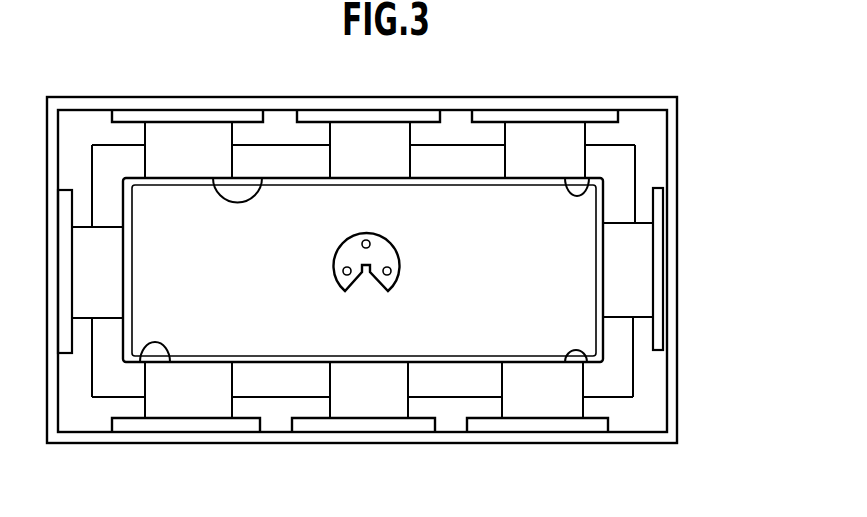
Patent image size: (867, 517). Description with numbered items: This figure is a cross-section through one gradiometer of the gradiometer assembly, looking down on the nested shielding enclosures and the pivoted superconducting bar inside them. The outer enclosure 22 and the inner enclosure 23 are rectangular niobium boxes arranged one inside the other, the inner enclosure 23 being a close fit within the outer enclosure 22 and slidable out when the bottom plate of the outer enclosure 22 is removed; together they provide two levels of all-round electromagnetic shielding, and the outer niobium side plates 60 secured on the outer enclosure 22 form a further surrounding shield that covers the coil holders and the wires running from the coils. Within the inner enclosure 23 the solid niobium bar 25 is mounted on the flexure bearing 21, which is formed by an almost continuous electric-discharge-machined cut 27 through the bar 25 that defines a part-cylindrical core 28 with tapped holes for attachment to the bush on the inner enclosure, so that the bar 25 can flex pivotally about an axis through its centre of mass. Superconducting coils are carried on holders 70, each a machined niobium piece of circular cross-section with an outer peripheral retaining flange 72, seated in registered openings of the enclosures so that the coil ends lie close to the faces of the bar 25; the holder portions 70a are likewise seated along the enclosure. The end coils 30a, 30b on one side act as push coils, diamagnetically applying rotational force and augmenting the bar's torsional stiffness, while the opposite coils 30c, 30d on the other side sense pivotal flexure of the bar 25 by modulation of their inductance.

The flexure bearing 21 is at (406, 258).
The outer enclosure 22 is at (645, 402).
The inner enclosure 23 is at (617, 188).
The solid bar 25 is at (243, 282).
The cut 27 is at (398, 279).
The part-cylindrical core 28 is at (385, 257).
The end coil 30a is at (140, 358).
The end coil 30b is at (593, 363).
The sense coil 30c is at (247, 192).
The sense coil 30d is at (595, 180).
The side plate 60 is at (675, 383).
The holder 70 is at (676, 218).
The frame rail 70a is at (211, 432).
The retaining flange 72 is at (658, 337).